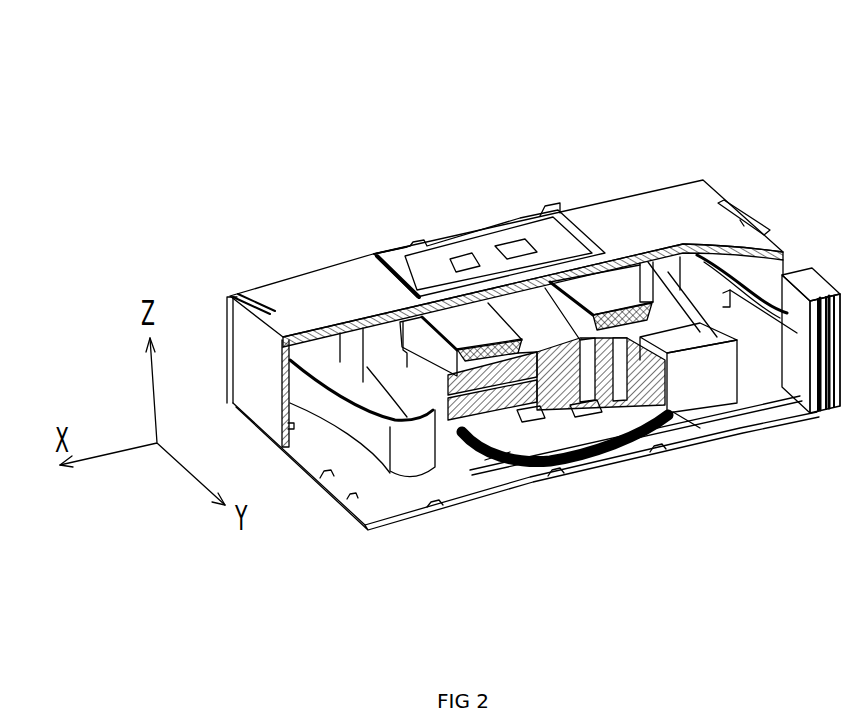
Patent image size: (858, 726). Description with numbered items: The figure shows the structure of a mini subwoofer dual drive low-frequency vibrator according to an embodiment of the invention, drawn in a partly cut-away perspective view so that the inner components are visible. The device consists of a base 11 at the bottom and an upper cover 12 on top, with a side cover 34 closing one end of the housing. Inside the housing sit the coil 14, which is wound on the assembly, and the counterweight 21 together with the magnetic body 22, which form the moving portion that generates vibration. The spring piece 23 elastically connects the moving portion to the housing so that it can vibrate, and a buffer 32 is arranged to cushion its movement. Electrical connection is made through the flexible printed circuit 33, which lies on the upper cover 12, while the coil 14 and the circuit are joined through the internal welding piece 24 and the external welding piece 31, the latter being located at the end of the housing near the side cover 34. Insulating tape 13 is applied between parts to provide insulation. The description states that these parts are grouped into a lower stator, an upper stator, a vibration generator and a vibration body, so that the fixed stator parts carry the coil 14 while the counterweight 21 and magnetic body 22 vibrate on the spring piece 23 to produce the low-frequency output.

The base 11 is at (320, 483).
The upper cover 12 is at (323, 303).
The insulating tape 13 is at (407, 250).
The coil 14 is at (467, 327).
The counterweight 21 is at (577, 410).
The magnetic body 22 is at (595, 420).
The spring piece 23 is at (730, 290).
The internal welding piece 24 is at (713, 380).
The external welding piece 31 is at (803, 287).
The buffer 32 is at (747, 288).
The flexible printed circuit 33 is at (548, 243).
The side cover 34 is at (822, 290).